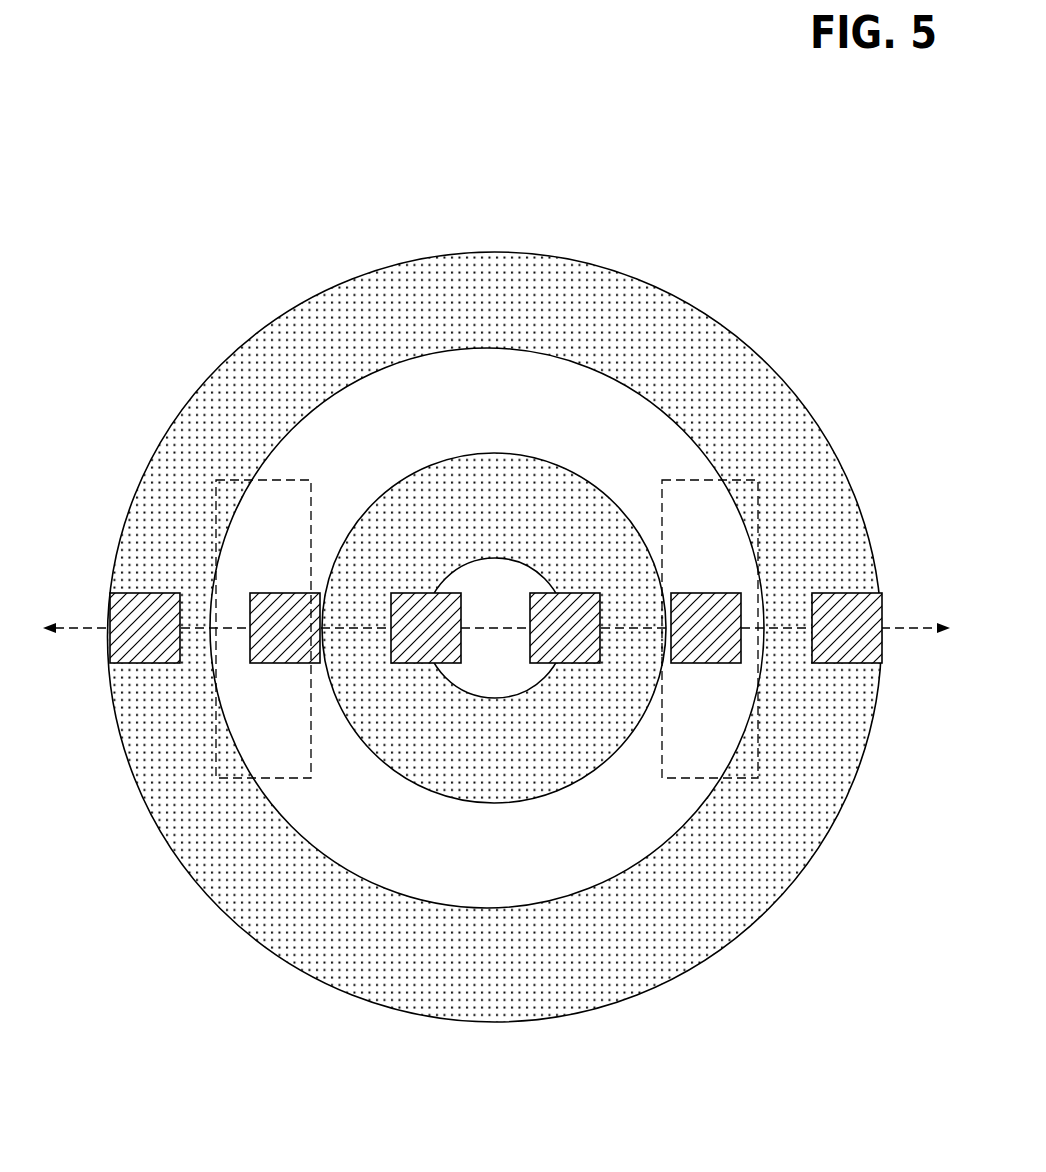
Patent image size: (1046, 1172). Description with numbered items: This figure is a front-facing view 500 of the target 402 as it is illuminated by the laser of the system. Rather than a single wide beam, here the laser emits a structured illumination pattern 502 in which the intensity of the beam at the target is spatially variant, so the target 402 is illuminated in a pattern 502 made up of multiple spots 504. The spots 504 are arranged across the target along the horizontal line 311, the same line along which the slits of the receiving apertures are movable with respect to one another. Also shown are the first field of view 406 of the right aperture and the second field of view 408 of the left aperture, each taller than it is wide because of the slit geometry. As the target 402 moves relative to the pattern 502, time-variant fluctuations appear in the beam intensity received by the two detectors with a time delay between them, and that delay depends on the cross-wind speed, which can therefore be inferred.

The front-facing view 500 is at (805, 143).
The target 402 is at (497, 251).
The first field of view 406 is at (265, 483).
The second field of view 408 is at (710, 480).
The structured illumination pattern 502 is at (840, 529).
The spots 504 is at (845, 594).
The horizontal line 311 is at (884, 627).